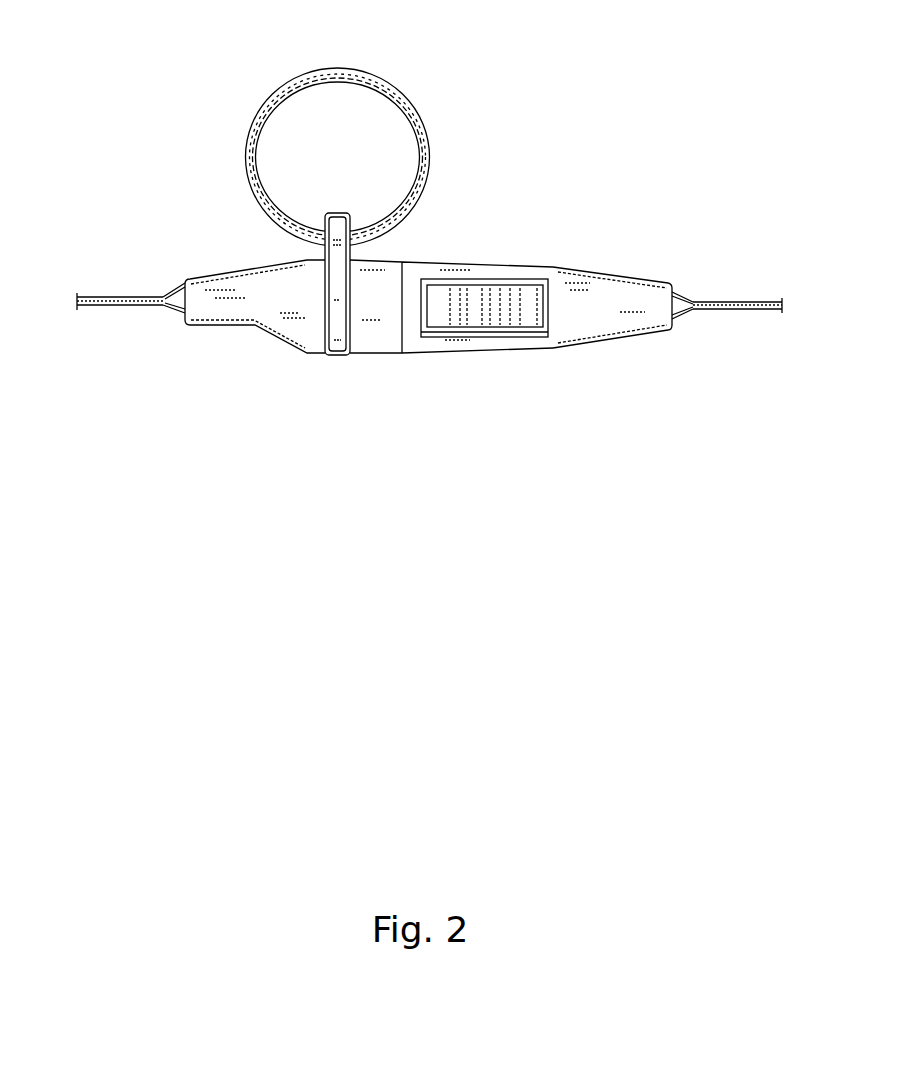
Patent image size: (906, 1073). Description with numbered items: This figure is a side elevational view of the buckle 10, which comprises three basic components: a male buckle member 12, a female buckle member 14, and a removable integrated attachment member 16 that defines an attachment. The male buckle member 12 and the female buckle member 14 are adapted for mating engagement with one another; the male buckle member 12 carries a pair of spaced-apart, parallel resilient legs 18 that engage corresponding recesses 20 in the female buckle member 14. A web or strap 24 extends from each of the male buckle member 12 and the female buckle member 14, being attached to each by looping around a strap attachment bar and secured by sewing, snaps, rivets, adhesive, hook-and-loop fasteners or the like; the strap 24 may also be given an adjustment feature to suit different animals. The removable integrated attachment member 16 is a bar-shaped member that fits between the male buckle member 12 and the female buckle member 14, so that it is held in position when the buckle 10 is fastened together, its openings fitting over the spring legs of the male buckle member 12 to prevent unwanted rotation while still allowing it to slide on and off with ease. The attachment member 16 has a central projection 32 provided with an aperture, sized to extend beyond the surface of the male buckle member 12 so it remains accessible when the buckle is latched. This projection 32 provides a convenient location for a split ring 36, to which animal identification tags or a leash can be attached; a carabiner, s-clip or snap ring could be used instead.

The buckle 10 is at (173, 68).
The male buckle member 12 is at (233, 303).
The female buckle member 14 is at (612, 308).
The removable integrated attachment member 16 is at (354, 278).
The resilient legs 18 is at (510, 300).
The recesses 20 is at (500, 337).
The web or strap 24 is at (133, 297).
The central projection 32 is at (334, 235).
The split ring 36 is at (419, 128).